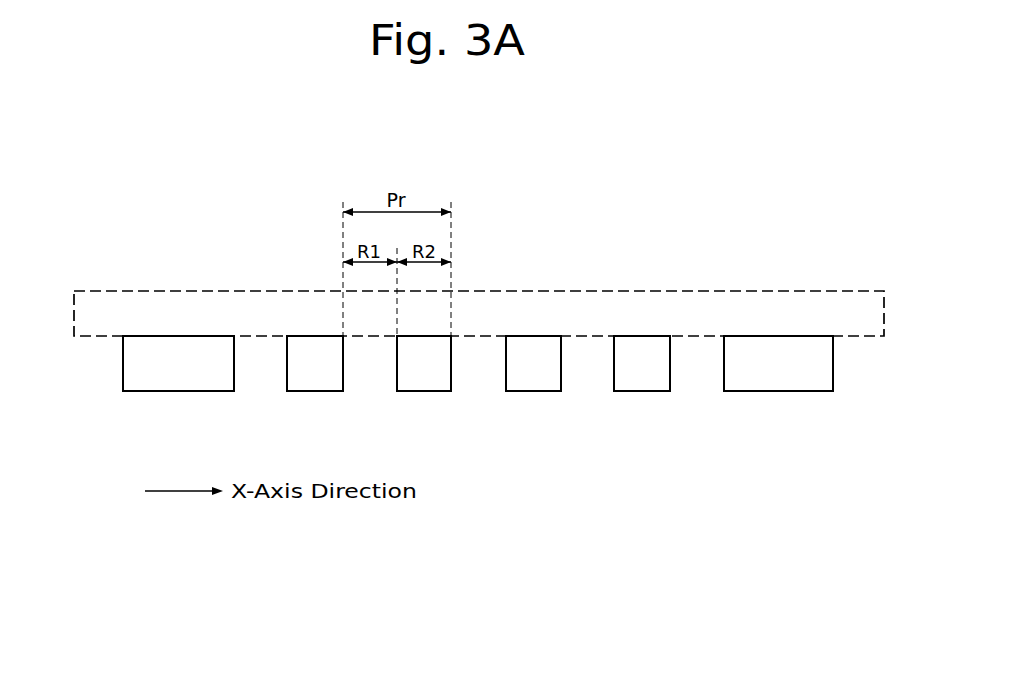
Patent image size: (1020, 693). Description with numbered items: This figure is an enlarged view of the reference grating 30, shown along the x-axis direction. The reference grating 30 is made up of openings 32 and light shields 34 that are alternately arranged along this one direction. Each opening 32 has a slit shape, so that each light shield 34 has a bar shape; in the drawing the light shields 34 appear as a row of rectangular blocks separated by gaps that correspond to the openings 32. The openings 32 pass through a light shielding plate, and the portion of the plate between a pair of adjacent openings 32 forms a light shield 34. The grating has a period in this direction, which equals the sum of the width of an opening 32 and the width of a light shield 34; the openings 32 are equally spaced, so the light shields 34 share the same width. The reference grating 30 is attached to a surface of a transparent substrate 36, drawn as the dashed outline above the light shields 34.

The reference grating 30 is at (444, 394).
The opening 32 is at (372, 383).
The light shield 34 is at (427, 377).
The transparent substrate 36 is at (790, 303).